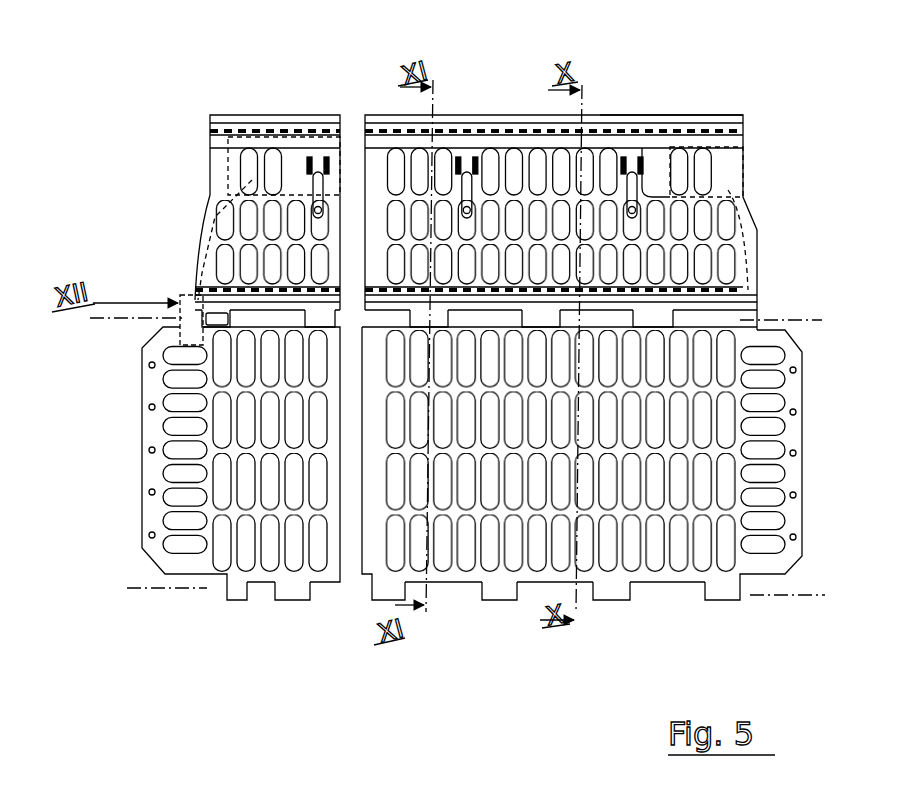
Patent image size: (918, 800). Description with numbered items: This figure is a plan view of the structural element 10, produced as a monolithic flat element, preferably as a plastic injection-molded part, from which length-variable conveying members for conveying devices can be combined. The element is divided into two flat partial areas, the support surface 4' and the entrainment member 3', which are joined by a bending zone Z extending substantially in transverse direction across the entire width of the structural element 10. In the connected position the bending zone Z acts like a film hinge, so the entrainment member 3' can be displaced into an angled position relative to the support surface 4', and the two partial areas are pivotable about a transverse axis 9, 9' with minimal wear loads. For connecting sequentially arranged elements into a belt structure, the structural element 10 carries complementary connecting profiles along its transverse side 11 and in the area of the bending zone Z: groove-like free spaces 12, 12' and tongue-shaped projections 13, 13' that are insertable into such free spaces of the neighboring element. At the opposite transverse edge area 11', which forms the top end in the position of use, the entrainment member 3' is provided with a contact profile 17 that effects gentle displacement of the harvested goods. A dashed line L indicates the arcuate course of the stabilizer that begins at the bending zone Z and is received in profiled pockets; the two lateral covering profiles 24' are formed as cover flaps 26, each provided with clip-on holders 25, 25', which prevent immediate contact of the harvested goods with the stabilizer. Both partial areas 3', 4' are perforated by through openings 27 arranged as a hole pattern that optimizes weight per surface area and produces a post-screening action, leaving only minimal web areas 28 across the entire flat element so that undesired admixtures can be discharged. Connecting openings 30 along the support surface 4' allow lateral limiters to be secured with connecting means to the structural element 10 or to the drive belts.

The structural element 10 is at (165, 108).
The transverse side 11 is at (472, 528).
The transverse edge area 11' is at (476, 173).
The groove-like free space 12 is at (476, 630).
The groove-like free space 12' is at (471, 274).
The projection 13 is at (483, 625).
The projection 13' is at (506, 243).
The contact profile 17 is at (670, 110).
The lateral covering profile 24' is at (478, 153).
The clip-on holder 25 is at (644, 136).
The clip-on holder 25' is at (342, 143).
The cover flap 26 is at (262, 172).
The through opening 27 is at (437, 473).
The web area 28 is at (403, 535).
The connecting opening 30 is at (150, 535).
The dashed line L is at (323, 190).
The bending zone Z is at (730, 311).
The entrainment member 3' is at (823, 223).
The support surface 4' is at (832, 412).
The transverse axis 9 is at (136, 351).
The transverse axis 9' is at (145, 627).